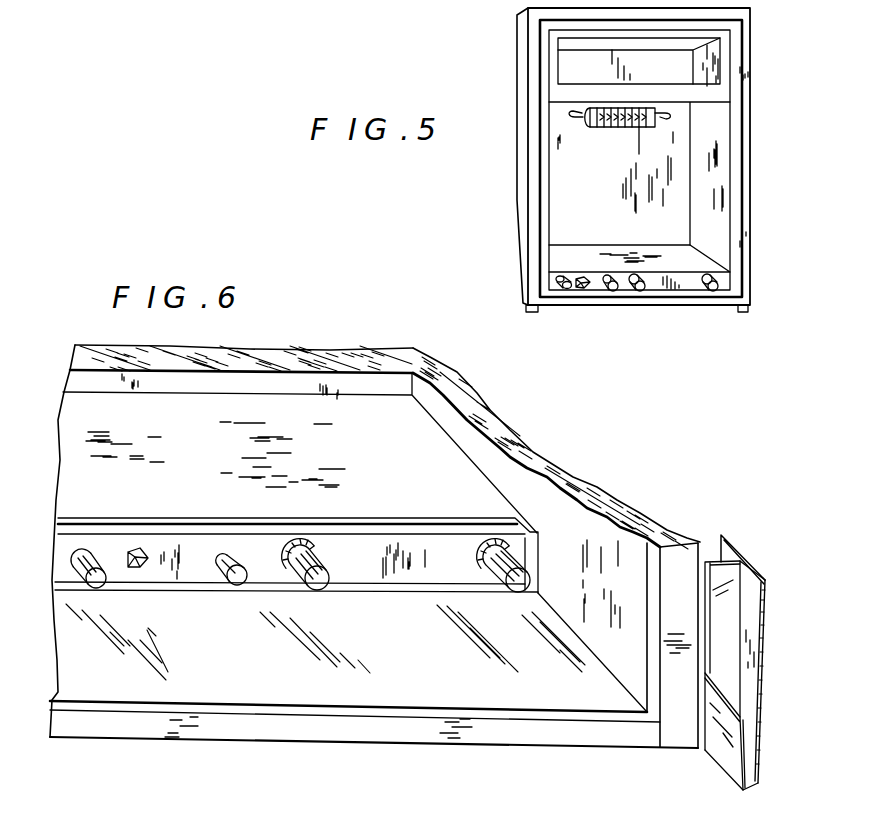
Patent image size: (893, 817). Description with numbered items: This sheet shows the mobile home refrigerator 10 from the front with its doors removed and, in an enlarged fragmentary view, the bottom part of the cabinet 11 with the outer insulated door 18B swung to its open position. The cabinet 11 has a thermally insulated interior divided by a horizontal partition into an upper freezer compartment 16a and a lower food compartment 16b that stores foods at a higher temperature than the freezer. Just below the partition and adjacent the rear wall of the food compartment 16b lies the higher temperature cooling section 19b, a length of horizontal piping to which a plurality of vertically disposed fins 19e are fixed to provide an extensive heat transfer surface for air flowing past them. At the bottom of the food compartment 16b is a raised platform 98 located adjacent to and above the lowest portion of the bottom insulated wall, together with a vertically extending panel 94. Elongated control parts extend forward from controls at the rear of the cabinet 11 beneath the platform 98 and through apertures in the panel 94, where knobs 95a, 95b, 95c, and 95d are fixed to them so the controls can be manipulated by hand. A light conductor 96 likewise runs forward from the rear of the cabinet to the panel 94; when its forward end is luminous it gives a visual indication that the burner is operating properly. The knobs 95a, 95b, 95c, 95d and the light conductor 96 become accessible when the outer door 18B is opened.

In FIG. 5, the mobile home refrigerator 10 is at (758, 176).
In FIG. 5, the cabinet 11 is at (750, 304).
In FIG. 6, the cabinet 11 is at (533, 746).
In FIG. 5, the freezer compartment 16a is at (575, 70).
In FIG. 5, the food compartment 16b is at (558, 183).
In FIG. 5, the higher temperature cooling section 19b is at (575, 121).
In FIG. 5, the fins 19e is at (625, 128).
In FIG. 5, the raised platform 98 is at (608, 253).
In FIG. 6, the raised platform 98 is at (312, 402).
In FIG. 5, the light conductor 96 is at (580, 280).
In FIG. 6, the light conductor 96 is at (140, 554).
In FIG. 5, the knob 95a is at (711, 292).
In FIG. 6, the knob 95a is at (518, 592).
In FIG. 5, the knob 95b is at (637, 292).
In FIG. 6, the knob 95b is at (320, 590).
In FIG. 5, the knob 95c is at (563, 292).
In FIG. 6, the knob 95c is at (97, 585).
In FIG. 5, the knob 95d is at (610, 292).
In FIG. 6, the knob 95d is at (233, 586).
In FIG. 5, the panel 94 is at (680, 273).
In FIG. 6, the panel 94 is at (418, 546).
In FIG. 6, the outer insulated door 18B is at (800, 582).